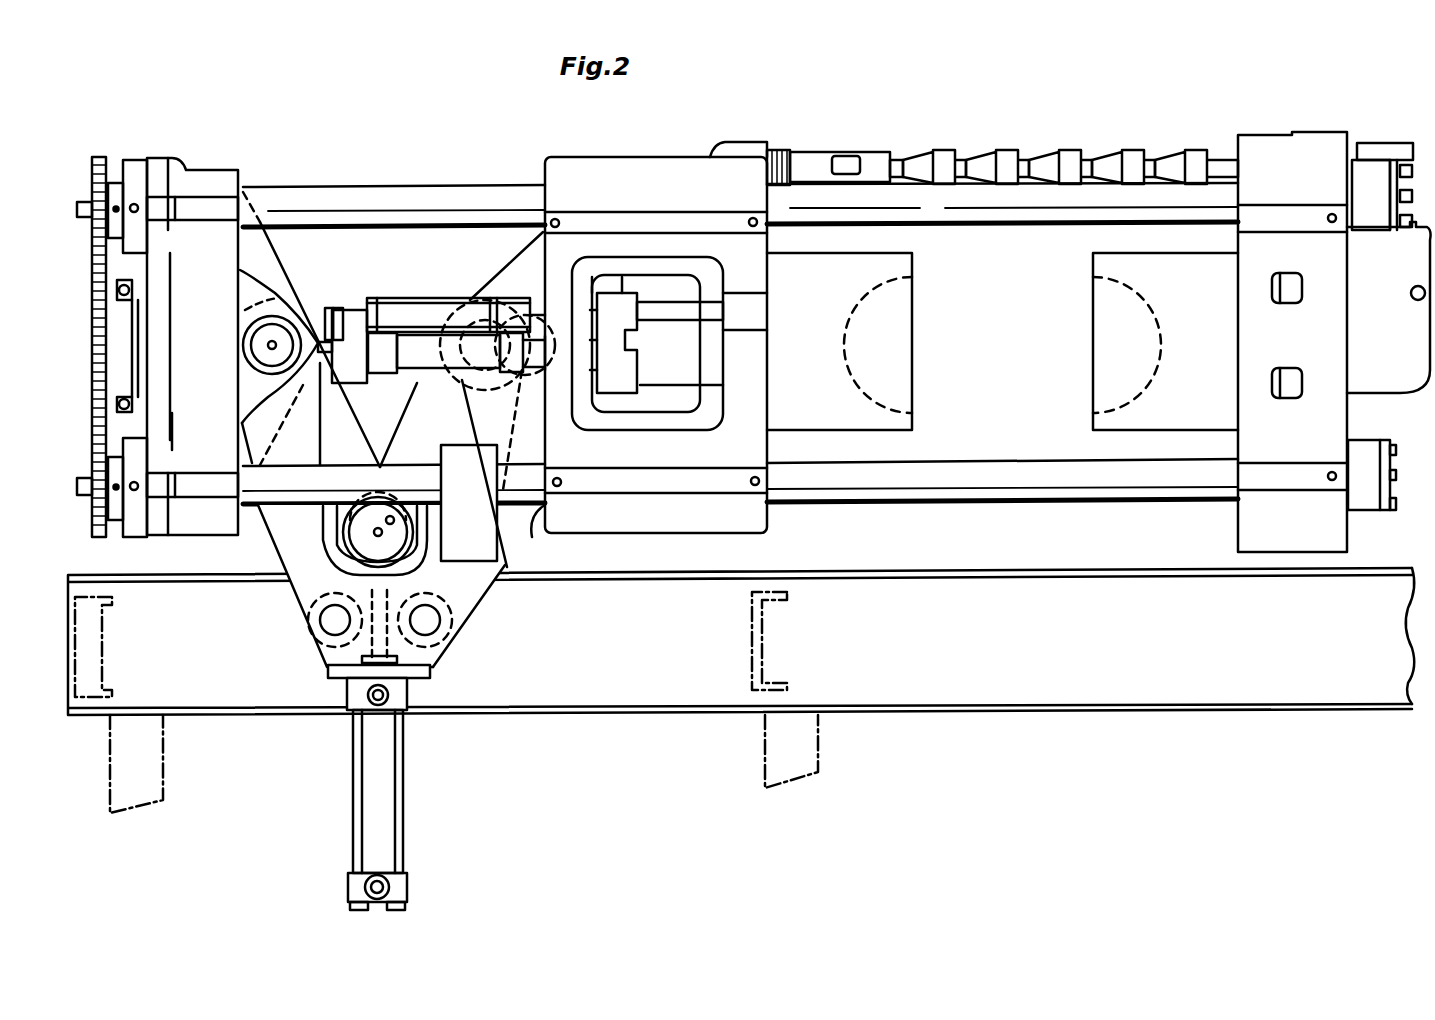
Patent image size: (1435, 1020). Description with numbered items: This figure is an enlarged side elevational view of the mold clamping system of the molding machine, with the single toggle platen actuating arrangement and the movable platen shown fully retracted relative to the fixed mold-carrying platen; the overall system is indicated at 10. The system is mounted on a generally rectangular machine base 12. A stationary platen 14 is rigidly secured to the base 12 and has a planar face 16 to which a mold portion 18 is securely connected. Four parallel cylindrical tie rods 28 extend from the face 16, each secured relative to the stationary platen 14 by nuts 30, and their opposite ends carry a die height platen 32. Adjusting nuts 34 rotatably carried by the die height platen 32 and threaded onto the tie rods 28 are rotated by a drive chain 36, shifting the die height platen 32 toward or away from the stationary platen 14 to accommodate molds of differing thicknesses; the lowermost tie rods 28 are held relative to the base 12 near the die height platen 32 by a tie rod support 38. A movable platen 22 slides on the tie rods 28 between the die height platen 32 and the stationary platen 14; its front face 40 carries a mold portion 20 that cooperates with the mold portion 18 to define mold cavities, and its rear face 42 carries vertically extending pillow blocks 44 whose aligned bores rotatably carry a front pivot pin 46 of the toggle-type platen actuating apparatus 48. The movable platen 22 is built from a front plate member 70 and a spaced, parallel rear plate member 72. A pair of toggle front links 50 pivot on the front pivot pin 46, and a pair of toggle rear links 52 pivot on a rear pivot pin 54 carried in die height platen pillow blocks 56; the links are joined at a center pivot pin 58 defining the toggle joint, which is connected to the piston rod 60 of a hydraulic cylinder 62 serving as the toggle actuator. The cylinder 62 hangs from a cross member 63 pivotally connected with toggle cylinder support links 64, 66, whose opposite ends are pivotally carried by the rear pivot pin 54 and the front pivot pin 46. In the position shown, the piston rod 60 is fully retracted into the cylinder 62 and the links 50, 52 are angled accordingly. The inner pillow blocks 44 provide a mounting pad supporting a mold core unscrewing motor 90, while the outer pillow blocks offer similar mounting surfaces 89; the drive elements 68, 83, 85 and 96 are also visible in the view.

The apparatus 10 is at (928, 73).
The machine base 12 is at (1048, 708).
The stationary platen 14 is at (1272, 140).
The planar face 16 is at (1238, 522).
The mold portion 18 is at (1152, 257).
The mold portion 20 is at (823, 256).
The movable platen 22 is at (618, 168).
The tie rods 28 is at (495, 186).
The nuts 30 is at (1358, 166).
The die height platen 32 is at (200, 178).
The adjusting nuts 34 is at (115, 182).
The drive chain 36 is at (147, 265).
The tie rod support 38 is at (480, 550).
The front face 40 is at (772, 512).
The rear face 42 is at (543, 528).
The pillow blocks 44 is at (518, 243).
The front pivot pin 46 is at (472, 304).
The platen actuating apparatus 48 is at (398, 120).
The toggle front links 50 is at (436, 329).
The toggle rear links 52 is at (333, 413).
The rear pivot pin 54 is at (282, 323).
The die height platen pillow blocks 56 is at (240, 296).
The center pivot pin 58 is at (392, 516).
The piston rod 60 is at (335, 567).
The hydraulic cylinder 62 is at (372, 827).
The cross member 63 is at (355, 652).
The toggle cylinder support link 64 is at (268, 558).
The toggle cylinder support link 66 is at (462, 598).
The roller chain 68 is at (1060, 152).
The front plate member 70 is at (754, 440).
The rear plate member 72 is at (558, 258).
The clamp jaw 83 is at (612, 342).
The clamp bar 85 is at (697, 318).
The vertically extending surfaces 89 is at (370, 300).
The mold core unscrewing motor 90 is at (340, 310).
The flange 96 is at (733, 146).